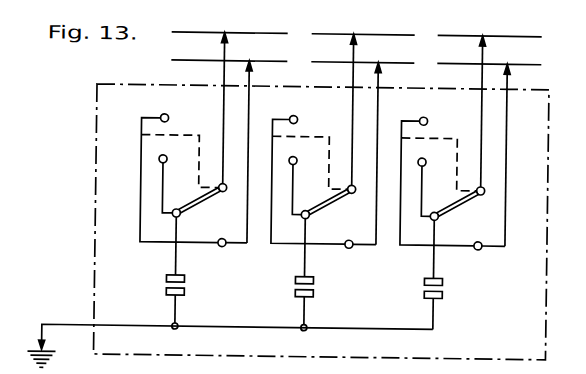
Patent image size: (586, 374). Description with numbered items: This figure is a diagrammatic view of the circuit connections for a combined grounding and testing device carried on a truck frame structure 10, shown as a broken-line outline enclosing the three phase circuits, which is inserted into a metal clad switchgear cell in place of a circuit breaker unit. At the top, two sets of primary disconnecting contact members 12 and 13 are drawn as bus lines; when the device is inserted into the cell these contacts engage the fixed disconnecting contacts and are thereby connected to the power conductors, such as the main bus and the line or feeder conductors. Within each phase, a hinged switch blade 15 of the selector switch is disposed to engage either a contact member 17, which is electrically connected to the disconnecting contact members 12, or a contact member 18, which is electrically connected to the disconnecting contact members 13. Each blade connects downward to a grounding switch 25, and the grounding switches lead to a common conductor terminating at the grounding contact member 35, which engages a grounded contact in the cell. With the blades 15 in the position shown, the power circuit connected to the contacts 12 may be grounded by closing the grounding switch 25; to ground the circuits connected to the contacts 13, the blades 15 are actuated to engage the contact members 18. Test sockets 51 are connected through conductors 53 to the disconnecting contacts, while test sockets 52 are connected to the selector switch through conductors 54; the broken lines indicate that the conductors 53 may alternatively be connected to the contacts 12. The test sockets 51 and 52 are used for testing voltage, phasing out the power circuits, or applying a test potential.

The truck frame structure 10 is at (581, 197).
The primary disconnecting contact members 12 is at (222, 37).
The primary disconnecting contact members 13 is at (251, 66).
The switch blades 15 is at (211, 199).
The contact members 17 is at (227, 183).
The contact members 18 is at (227, 238).
The grounding switch 25 is at (188, 279).
The grounding contact member 35 is at (40, 347).
The test sockets 51 is at (168, 114).
The test sockets 52 is at (167, 155).
The conductors 53 is at (142, 204).
The conductors 54 is at (165, 177).